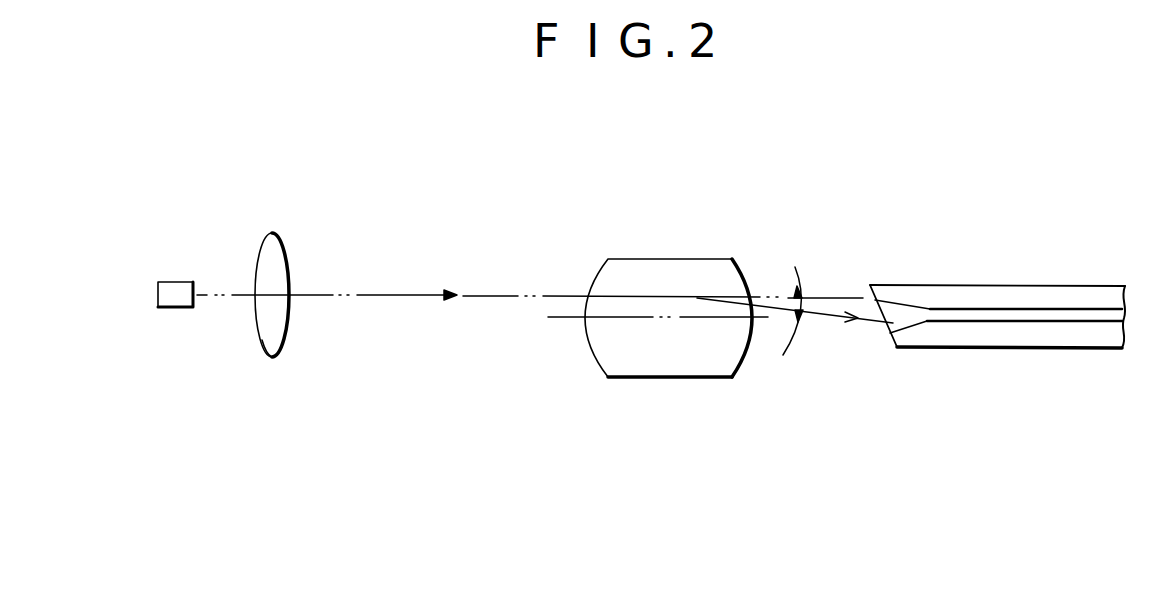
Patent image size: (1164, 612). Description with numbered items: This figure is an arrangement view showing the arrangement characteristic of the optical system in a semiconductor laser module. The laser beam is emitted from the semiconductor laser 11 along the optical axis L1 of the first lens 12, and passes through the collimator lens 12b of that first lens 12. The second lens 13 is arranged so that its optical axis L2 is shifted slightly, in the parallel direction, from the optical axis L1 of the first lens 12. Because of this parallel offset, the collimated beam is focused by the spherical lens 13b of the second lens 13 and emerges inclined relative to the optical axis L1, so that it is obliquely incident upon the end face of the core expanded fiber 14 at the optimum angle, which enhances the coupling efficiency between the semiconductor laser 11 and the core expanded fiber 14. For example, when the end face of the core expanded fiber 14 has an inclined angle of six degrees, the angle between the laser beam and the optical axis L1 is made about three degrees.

The semiconductor laser 11 is at (173, 282).
The first lens 12 is at (281, 228).
The collimator lens 12b is at (268, 338).
The second lens 13 is at (647, 250).
The spherical lens 13b is at (703, 360).
The core expanded fiber 14 is at (1002, 297).
The optical axis of the first lens L1 is at (383, 297).
The optical axis of the second lens L2 is at (567, 318).